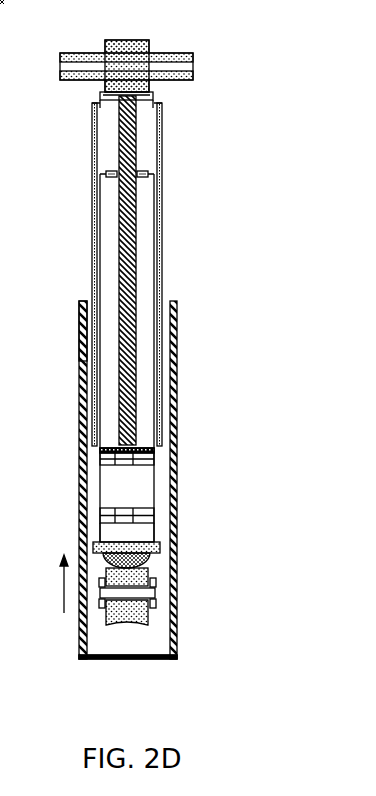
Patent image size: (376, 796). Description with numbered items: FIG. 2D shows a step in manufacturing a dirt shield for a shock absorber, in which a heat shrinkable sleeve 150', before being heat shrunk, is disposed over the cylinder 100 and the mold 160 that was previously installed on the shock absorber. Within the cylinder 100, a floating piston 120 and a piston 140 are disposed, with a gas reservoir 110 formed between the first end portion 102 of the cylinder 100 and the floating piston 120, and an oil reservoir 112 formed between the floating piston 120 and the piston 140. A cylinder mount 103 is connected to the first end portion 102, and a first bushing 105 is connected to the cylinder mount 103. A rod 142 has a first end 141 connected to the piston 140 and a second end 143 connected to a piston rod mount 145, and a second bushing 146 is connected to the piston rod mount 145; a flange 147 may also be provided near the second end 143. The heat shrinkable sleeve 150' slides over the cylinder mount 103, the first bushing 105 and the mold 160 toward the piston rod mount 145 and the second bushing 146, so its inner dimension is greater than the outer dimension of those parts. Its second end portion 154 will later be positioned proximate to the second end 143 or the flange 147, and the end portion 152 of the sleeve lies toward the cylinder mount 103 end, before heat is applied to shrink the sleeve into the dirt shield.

The cylinder 100 is at (160, 287).
The first end portion 102 is at (157, 531).
The cylinder mount 103 is at (148, 620).
The first bushing 105 is at (152, 581).
The gas reservoir 110 is at (113, 531).
The oil reservoir 112 is at (115, 481).
The floating piston 120 is at (135, 510).
The piston 140 is at (112, 447).
The first end 141 is at (135, 445).
The rod 142 is at (139, 327).
The second end 143 is at (136, 105).
The piston rod mount 145 is at (130, 40).
The second bushing 146 is at (173, 53).
The flange 147 is at (105, 103).
The heat shrinkable sleeve 150' is at (174, 480).
The housing bottom 152 is at (80, 645).
The second end portion 154 is at (82, 305).
The mold 160 is at (91, 283).